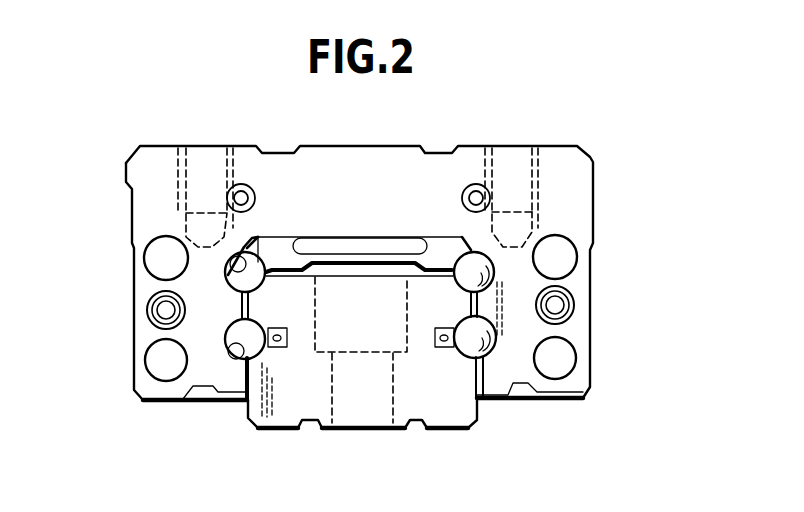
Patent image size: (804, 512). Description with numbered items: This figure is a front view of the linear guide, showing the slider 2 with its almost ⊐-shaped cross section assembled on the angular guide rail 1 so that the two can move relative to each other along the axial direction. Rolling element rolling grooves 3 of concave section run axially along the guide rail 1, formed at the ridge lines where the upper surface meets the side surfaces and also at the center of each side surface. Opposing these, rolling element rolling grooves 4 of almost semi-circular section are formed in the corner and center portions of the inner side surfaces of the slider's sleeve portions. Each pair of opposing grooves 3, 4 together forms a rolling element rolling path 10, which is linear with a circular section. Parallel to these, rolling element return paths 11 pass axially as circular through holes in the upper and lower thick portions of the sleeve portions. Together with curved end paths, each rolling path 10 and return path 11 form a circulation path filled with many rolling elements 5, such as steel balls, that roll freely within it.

The guide rail 1 is at (447, 394).
The slider 2 is at (580, 160).
The rolling element rolling groove 3 is at (230, 332).
The rolling element rolling groove 4 is at (247, 260).
The rolling element 5 is at (482, 333).
The rolling element rolling path 10 is at (245, 350).
The rolling element return path 11 is at (553, 251).